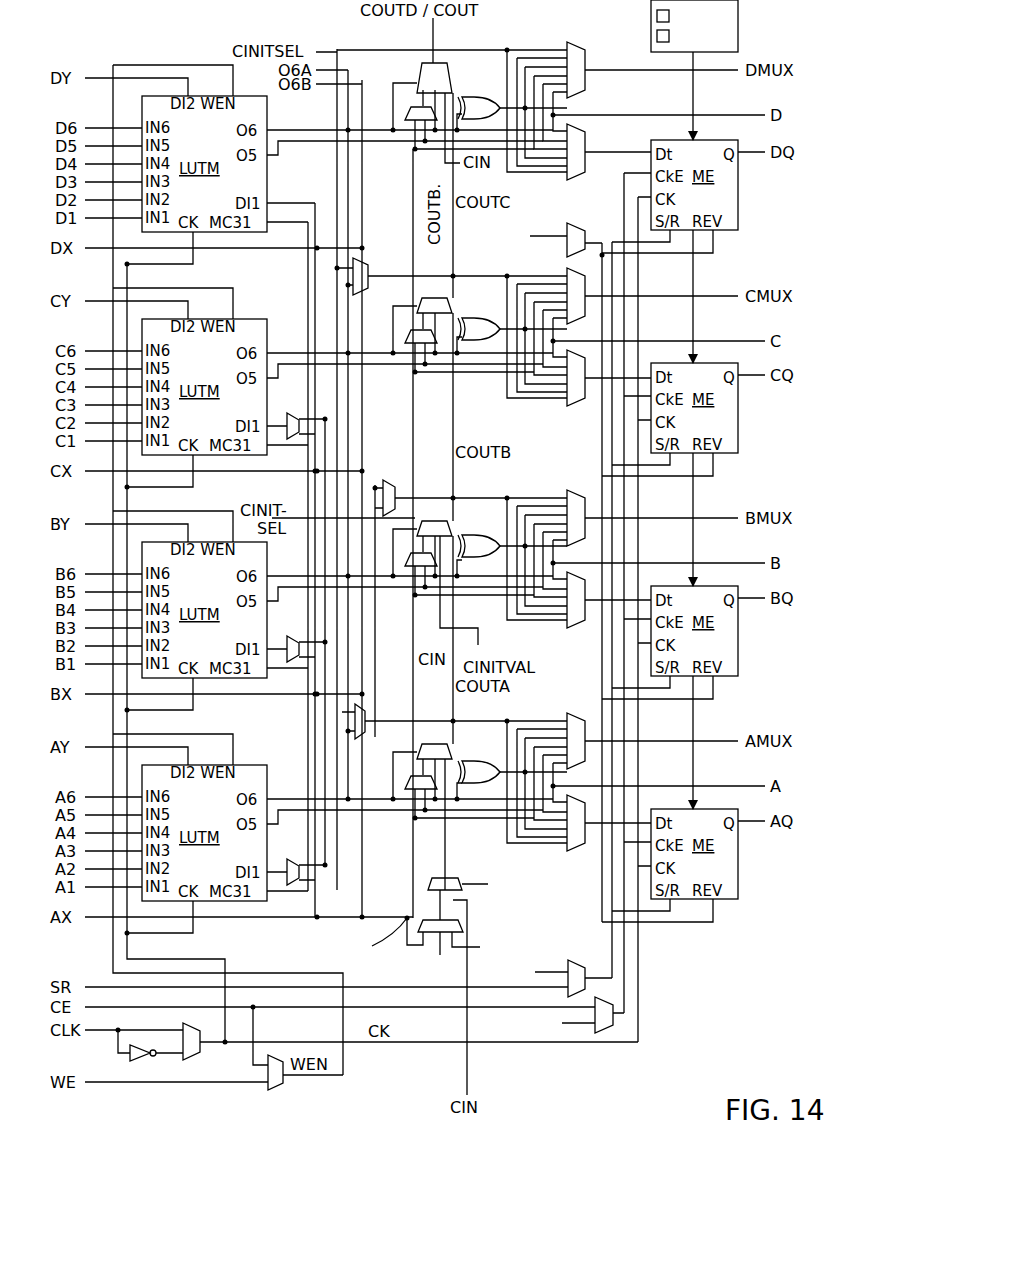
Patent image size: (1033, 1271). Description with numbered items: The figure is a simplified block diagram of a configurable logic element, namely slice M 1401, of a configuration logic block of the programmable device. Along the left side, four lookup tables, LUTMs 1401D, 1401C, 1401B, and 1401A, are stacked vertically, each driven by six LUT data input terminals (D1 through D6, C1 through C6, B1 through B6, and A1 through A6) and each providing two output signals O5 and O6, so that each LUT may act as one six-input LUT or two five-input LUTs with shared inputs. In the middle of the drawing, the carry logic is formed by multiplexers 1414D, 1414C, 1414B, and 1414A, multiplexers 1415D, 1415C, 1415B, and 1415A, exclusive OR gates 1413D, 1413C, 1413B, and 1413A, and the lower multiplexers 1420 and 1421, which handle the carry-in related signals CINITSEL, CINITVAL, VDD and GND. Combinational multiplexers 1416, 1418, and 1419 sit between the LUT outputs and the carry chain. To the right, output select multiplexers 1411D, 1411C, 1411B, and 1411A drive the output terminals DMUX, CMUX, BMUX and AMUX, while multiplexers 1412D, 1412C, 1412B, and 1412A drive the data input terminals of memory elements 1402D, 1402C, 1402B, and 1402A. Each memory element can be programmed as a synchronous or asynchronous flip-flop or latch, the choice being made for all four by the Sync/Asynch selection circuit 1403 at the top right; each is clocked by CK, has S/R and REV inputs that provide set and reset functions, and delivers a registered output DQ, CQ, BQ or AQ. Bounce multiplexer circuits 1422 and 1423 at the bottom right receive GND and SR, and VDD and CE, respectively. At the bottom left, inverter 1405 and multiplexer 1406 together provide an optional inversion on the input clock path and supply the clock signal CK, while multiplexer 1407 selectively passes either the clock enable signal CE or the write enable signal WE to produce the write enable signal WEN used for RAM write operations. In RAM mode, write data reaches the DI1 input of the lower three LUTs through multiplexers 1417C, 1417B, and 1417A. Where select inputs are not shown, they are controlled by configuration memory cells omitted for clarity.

The slice M 1401 is at (172, 40).
The lookup table (LUTM) 1401D is at (204, 163).
The lookup table (LUTM) 1401C is at (204, 386).
The lookup table (LUTM) 1401B is at (204, 609).
The lookup table (LUTM) 1401A is at (204, 832).
The memory element 1402D is at (694, 185).
The memory element 1402C is at (694, 408).
The memory element 1402B is at (694, 631).
The memory element 1402A is at (694, 854).
The Sync/Asynch selection circuit 1403 is at (651, 36).
The inverter 1405 is at (133, 1063).
The multiplexer 1406 is at (198, 1052).
The multiplexer 1407 is at (272, 1090).
The output select multiplexer 1411D is at (586, 78).
The output select multiplexer 1411C is at (570, 275).
The output select multiplexer 1411B is at (570, 497).
The output select multiplexer 1411A is at (570, 720).
The multiplexer 1412D is at (592, 138).
The multiplexer 1412C is at (580, 402).
The multiplexer 1412B is at (580, 625).
The multiplexer 1412A is at (580, 848).
The exclusive OR gate 1413D is at (494, 97).
The exclusive OR gate 1413C is at (496, 318).
The exclusive OR gate 1413B is at (496, 535).
The exclusive OR gate 1413A is at (496, 761).
The carry logic multiplexer 1414D is at (448, 63).
The carry logic multiplexer 1414C is at (440, 298).
The carry logic multiplexer 1414B is at (440, 521).
The carry logic multiplexer 1414A is at (440, 744).
The carry logic multiplexer 1415D is at (412, 122).
The carry logic multiplexer 1415C is at (437, 343).
The carry logic multiplexer 1415B is at (437, 566).
The carry logic multiplexer 1415A is at (437, 789).
The combinational multiplexer 1416 is at (362, 258).
The multiplexer 1417C is at (290, 440).
The multiplexer 1417B is at (290, 663).
The multiplexer 1417A is at (290, 886).
The combinational multiplexer 1418 is at (383, 497).
The combinational multiplexer 1419 is at (365, 742).
The carry logic multiplexer 1420 is at (462, 925).
The carry logic multiplexer 1421 is at (568, 224).
The bounce multiplexer circuit 1422 is at (576, 957).
The bounce multiplexer circuit 1423 is at (600, 1033).